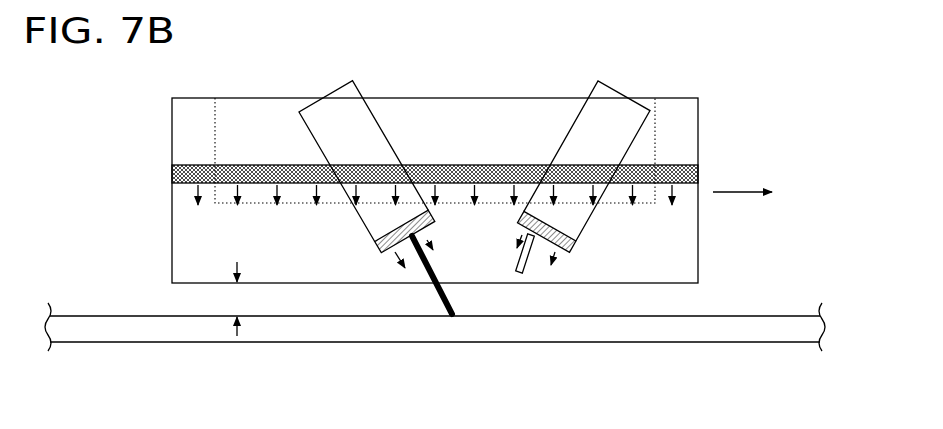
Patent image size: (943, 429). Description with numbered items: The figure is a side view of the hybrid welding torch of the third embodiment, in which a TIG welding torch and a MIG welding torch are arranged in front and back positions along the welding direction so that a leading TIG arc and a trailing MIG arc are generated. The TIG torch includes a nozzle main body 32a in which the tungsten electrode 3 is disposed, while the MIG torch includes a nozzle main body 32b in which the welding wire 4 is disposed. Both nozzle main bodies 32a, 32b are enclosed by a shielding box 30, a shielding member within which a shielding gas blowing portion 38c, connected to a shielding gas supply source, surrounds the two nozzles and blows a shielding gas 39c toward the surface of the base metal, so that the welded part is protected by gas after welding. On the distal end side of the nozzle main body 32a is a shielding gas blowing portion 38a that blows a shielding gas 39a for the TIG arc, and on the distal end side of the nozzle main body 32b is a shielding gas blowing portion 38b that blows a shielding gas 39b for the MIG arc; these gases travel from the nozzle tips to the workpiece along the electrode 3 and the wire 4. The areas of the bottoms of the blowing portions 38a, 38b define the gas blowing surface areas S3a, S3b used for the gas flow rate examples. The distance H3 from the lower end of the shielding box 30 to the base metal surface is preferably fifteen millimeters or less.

The shielding box 30 is at (169, 233).
The nozzle main body 32a is at (577, 123).
The nozzle main body 32b is at (373, 125).
The shielding gas blowing portion 38a is at (550, 230).
The shielding gas blowing portion 38b is at (400, 233).
The shielding gas blowing portion 38c is at (172, 169).
The shielding gas for a TIG arc 39a is at (523, 228).
The shielding gas for a MIG arc 39b is at (430, 230).
The shielding gas 39c is at (190, 187).
The area of gas blowing surface S3a is at (562, 257).
The area of gas blowing surface S3b is at (390, 257).
The tungsten electrode 3 is at (530, 257).
The welding wire 4 is at (420, 265).
The distance H3 is at (238, 293).